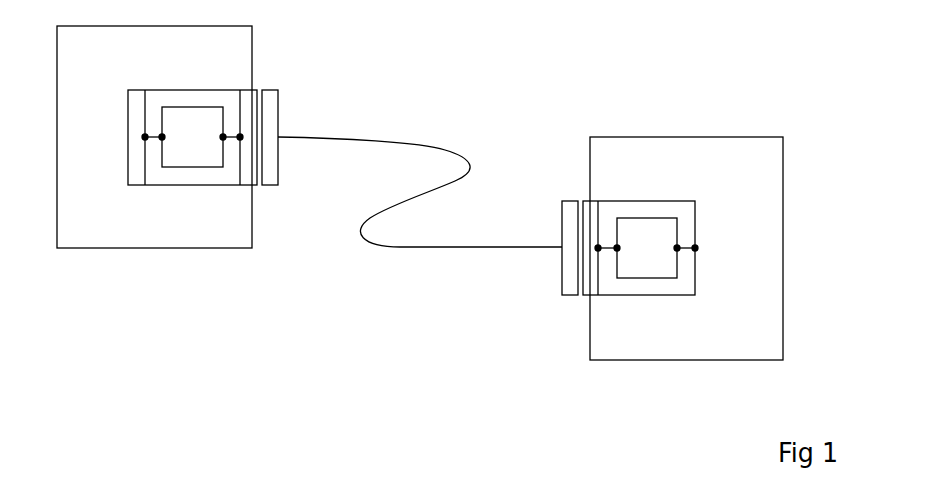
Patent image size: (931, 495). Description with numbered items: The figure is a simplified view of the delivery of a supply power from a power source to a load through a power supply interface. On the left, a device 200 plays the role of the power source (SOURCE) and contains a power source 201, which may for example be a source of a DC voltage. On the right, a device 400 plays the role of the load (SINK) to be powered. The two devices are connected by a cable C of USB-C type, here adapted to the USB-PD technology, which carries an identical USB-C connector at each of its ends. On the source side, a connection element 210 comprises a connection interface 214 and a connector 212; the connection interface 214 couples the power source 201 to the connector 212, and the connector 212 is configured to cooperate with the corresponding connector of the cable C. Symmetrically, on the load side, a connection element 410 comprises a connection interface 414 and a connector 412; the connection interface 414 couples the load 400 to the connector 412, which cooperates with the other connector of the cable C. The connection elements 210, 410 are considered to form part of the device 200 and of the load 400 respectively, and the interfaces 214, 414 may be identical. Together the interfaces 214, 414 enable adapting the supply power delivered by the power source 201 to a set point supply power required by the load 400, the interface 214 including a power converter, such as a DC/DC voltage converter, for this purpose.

The device 200 is at (95, 240).
The power source 201 is at (137, 183).
The connection element 210 is at (222, 186).
The connector 212 is at (252, 183).
The power supply interface 214 is at (200, 160).
The cable C is at (438, 147).
The device 400 is at (740, 345).
The connection element 410 is at (627, 301).
The connector 412 is at (585, 296).
The connection interface 414 is at (652, 272).